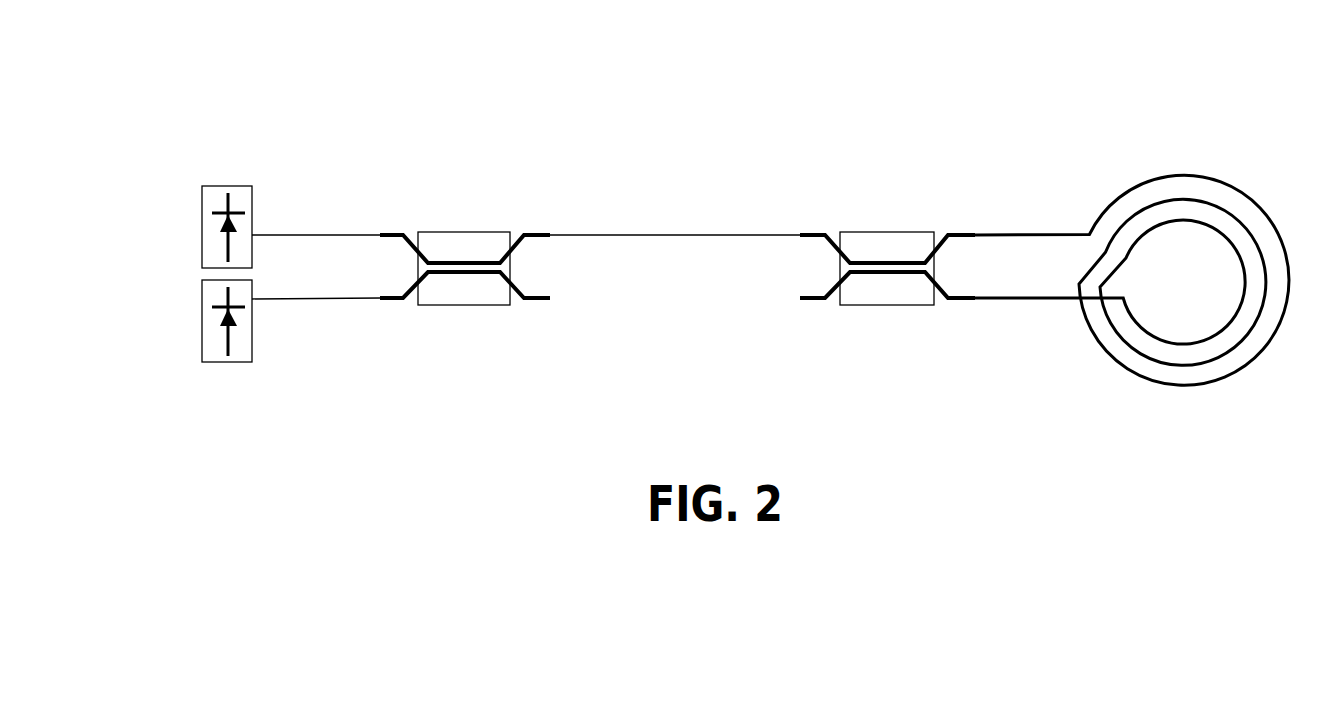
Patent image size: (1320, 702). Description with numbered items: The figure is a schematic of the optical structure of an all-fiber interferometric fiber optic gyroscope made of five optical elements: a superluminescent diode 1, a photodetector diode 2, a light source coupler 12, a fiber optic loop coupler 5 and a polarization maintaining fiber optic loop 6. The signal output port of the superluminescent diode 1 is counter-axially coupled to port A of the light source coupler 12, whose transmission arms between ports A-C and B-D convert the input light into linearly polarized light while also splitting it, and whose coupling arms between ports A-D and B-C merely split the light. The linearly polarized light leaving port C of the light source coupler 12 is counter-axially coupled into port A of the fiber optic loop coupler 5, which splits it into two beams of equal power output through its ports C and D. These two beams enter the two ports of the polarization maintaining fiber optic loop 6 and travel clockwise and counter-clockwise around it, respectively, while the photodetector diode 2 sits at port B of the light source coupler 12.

The superluminescent diode 1 is at (212, 169).
The photodetector diode 2 is at (208, 360).
The light source coupler 12 is at (466, 226).
The fiber optic loop coupler 5 is at (887, 226).
The polarization maintaining fiber optic loop 6 is at (1132, 241).